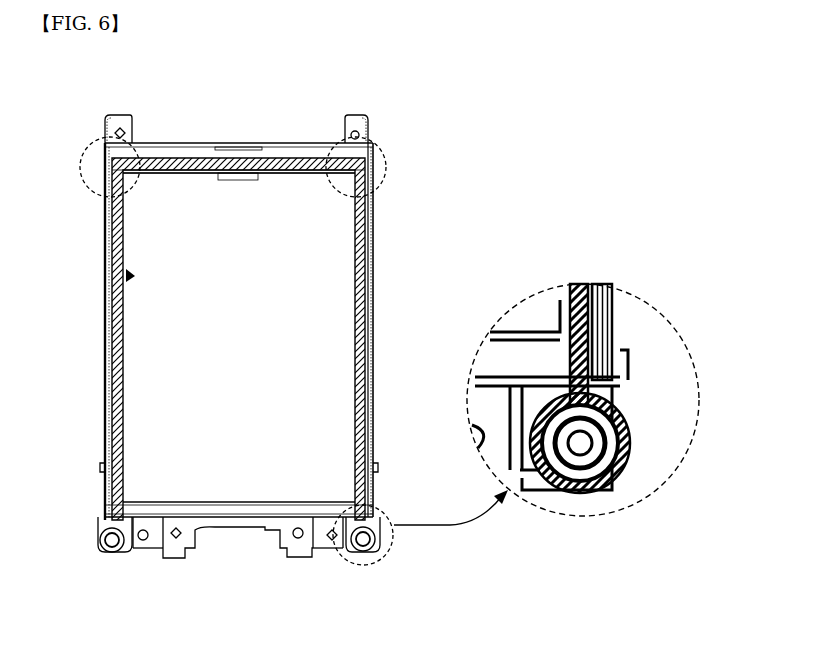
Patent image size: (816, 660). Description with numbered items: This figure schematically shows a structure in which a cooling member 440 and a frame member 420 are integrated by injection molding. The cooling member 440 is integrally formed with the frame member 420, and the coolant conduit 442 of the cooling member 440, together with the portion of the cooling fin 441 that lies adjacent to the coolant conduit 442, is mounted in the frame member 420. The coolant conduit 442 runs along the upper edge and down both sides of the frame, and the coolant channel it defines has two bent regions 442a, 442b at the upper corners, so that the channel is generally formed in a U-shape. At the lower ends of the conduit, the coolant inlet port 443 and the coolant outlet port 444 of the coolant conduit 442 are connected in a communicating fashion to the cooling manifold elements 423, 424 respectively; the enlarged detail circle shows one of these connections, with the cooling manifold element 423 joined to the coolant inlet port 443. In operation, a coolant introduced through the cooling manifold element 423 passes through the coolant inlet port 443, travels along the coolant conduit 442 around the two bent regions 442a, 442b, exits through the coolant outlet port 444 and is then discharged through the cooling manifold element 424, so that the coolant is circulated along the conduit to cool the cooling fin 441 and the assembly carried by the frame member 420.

The frame member 420 is at (278, 152).
The cooling manifold element 423 is at (612, 475).
The cooling manifold element 424 is at (100, 550).
The cooling member 440 is at (105, 258).
The cooling fin 441 is at (335, 247).
The coolant conduit 442 is at (178, 160).
The bent region 442a is at (387, 158).
The bent region 442b is at (88, 158).
The coolant inlet port 443 is at (588, 440).
The coolant outlet port 444 is at (100, 541).